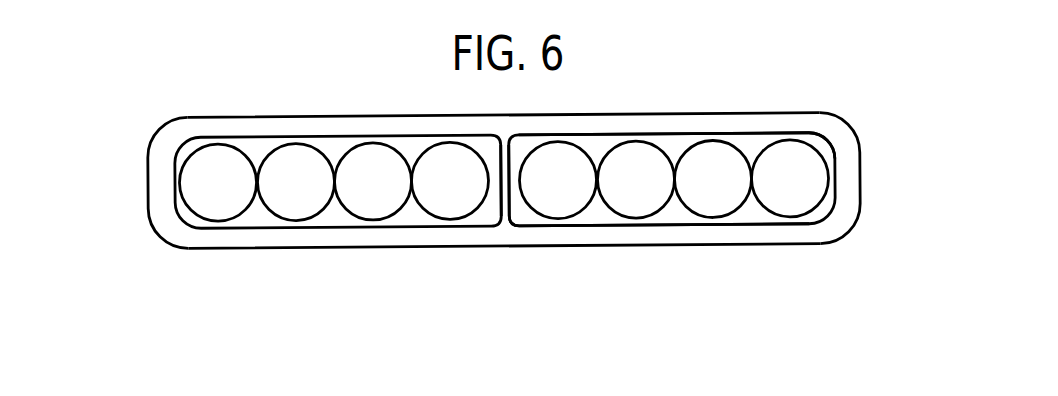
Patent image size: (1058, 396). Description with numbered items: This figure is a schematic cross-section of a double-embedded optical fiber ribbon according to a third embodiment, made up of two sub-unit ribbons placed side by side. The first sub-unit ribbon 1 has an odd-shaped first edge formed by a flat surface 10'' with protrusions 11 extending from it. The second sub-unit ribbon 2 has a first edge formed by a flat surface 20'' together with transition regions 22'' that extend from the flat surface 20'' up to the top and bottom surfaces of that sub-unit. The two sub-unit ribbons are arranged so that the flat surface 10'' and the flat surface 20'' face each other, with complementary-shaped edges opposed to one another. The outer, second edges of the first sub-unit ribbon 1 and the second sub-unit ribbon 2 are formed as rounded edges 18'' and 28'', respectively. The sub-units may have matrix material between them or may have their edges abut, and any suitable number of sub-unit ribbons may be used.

The first sub-unit ribbon 1 is at (177, 226).
The second sub-unit ribbon 2 is at (643, 223).
The flat surface 10'' is at (338, 227).
The flat surface 20'' is at (672, 226).
The protrusions 11 is at (501, 137).
The rounded edge 18'' is at (123, 182).
The transition regions 22'' is at (677, 119).
The rounded edge 28'' is at (882, 177).